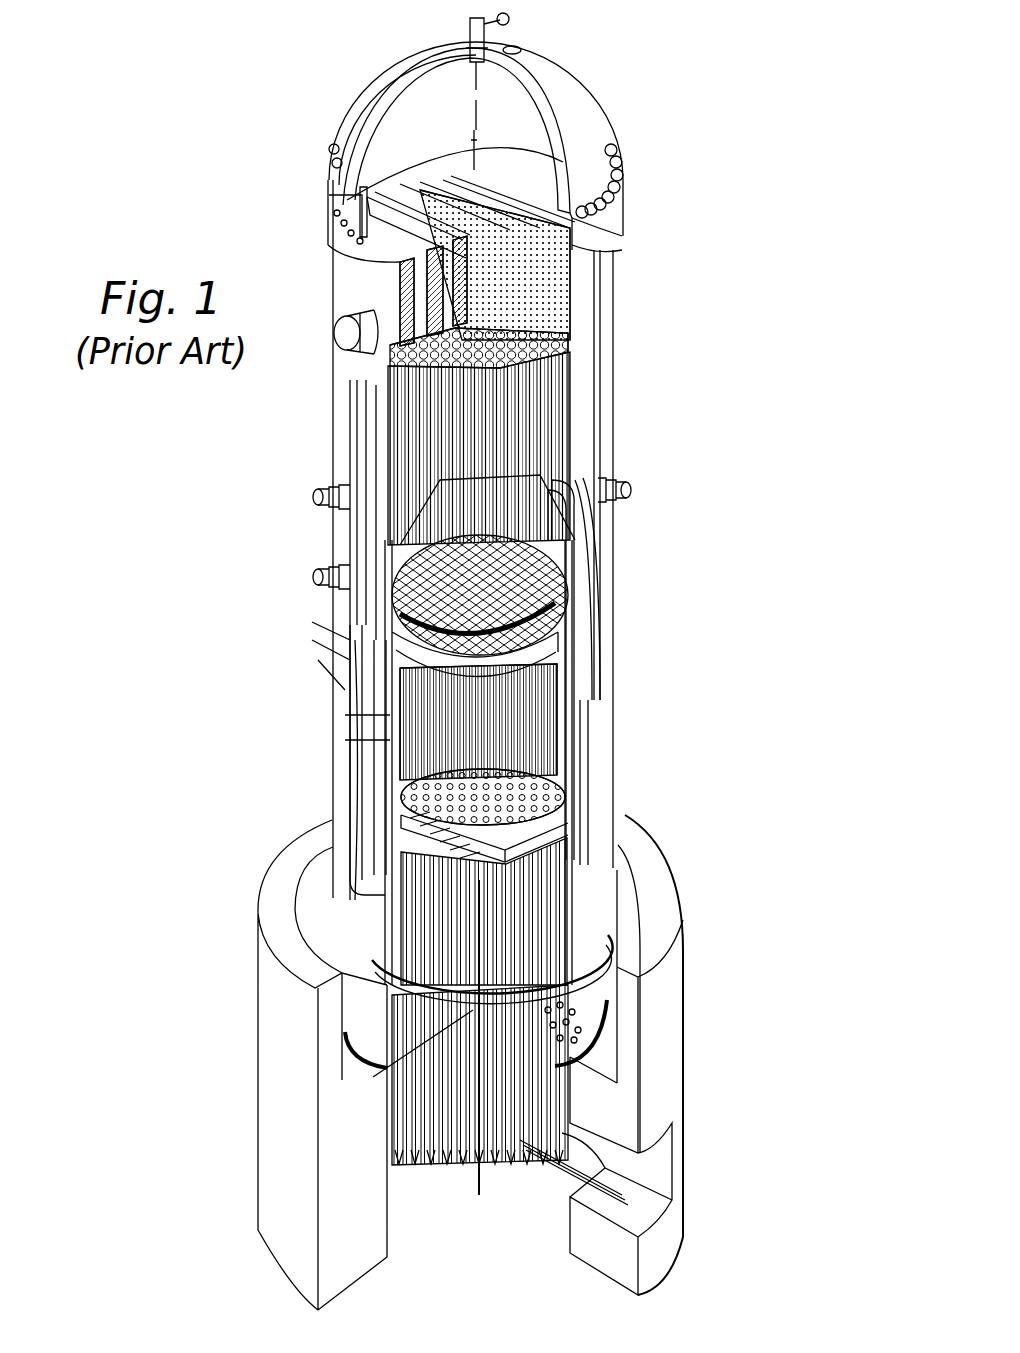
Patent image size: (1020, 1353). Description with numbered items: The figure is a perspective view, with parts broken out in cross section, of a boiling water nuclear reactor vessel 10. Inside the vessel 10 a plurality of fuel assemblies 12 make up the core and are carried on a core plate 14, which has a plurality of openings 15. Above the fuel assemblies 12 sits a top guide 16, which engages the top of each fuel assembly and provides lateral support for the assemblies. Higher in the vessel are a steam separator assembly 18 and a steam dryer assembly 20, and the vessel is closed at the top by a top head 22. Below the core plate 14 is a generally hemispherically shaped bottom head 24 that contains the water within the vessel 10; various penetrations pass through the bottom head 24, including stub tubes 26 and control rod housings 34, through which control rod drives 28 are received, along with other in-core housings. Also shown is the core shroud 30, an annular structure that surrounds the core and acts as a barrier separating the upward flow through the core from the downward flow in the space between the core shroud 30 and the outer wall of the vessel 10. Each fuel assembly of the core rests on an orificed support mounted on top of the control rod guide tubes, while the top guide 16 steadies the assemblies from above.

The nuclear reactor vessel 10 is at (718, 503).
The fuel assemblies 12 is at (415, 708).
The core plate 14 is at (533, 833).
The openings 15 is at (543, 800).
The top guide 16 is at (437, 663).
The steam separator assembly 18 is at (430, 413).
The steam dryer assembly 20 is at (553, 292).
The top head 22 is at (583, 128).
The bottom head 24 is at (400, 975).
The stub tubes 26 is at (487, 985).
The control rod drives 28 is at (400, 1012).
The core shroud 30 is at (580, 667).
The control rod housings 34 is at (400, 938).